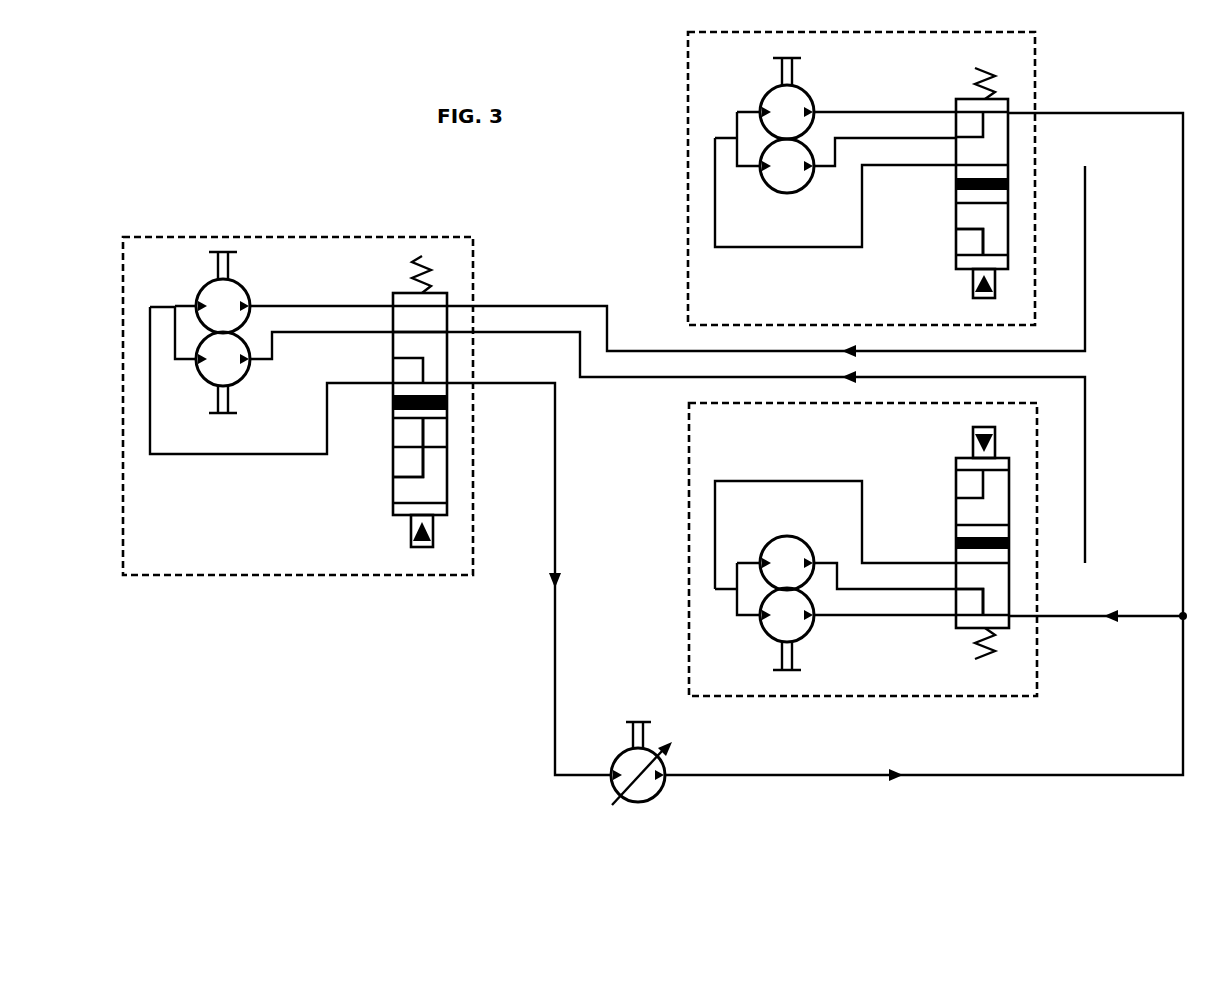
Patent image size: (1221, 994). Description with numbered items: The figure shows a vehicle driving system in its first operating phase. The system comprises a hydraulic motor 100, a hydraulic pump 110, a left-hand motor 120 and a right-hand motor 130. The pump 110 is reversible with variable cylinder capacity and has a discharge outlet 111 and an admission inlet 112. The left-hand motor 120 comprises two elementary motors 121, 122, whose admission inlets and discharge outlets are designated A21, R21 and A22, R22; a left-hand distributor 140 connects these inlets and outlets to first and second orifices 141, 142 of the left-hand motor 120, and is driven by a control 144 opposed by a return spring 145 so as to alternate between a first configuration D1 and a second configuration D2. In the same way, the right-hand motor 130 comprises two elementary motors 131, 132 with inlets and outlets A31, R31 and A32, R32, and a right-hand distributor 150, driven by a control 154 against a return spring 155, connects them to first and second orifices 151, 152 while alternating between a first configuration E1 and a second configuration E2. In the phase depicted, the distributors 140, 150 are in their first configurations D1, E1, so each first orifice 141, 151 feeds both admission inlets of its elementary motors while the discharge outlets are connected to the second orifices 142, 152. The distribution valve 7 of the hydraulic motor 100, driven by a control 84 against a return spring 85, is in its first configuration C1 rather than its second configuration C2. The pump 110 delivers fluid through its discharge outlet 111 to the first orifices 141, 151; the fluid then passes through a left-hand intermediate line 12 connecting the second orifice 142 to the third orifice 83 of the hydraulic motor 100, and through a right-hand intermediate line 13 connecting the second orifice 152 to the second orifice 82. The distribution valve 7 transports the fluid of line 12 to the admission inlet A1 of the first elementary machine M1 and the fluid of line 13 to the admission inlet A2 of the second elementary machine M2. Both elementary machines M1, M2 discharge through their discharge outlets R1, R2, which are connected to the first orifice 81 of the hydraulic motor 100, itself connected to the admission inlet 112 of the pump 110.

The hydraulic motor 100 is at (305, 237).
The first elementary machine M1 is at (215, 303).
The second elementary machine M2 is at (214, 356).
The discharge outlet of the first elementary machine R1 is at (196, 301).
The admission inlet of the first elementary machine A1 is at (250, 302).
The discharge outlet of the second elementary machine R2 is at (198, 362).
The admission inlet of the second elementary machine A2 is at (250, 361).
The distribution valve 7 is at (392, 485).
The first orifice of the hydraulic motor 81 is at (448, 383).
The second orifice of the hydraulic motor 82 is at (448, 333).
The third orifice of the hydraulic motor 83 is at (448, 305).
The control of the distribution valve 84 is at (418, 547).
The return spring of the distribution valve 85 is at (412, 262).
The first configuration of the distribution valve C1 is at (403, 318).
The second configuration of the distribution valve C2 is at (438, 469).
The left-hand intermediate line 12 is at (638, 351).
The right-hand intermediate line 13 is at (641, 378).
The left-hand motor 120 is at (688, 183).
The elementary motor 121 is at (781, 108).
The elementary motor 122 is at (784, 172).
The discharge outlet of elementary motor 121 R21 is at (760, 107).
The admission inlet of elementary motor 121 A21 is at (815, 108).
The discharge outlet of elementary motor 122 R22 is at (760, 170).
The admission inlet of elementary motor 122 A22 is at (815, 170).
The left-hand distributor 140 is at (955, 210).
The first orifice of the left-hand motor 141 is at (1010, 111).
The second orifice of the left-hand motor 142 is at (1010, 166).
The control of the left-hand distributor 144 is at (979, 298).
The return spring of the left-hand distributor 145 is at (978, 72).
The first configuration of the left-hand distributor D1 is at (999, 133).
The second configuration of the left-hand distributor D2 is at (999, 237).
The right-hand motor 130 is at (688, 563).
The elementary motor 131 is at (782, 626).
The elementary motor 132 is at (784, 560).
The discharge outlet of elementary motor 131 R31 is at (760, 618).
The admission inlet of elementary motor 131 A31 is at (815, 618).
The discharge outlet of elementary motor 132 R32 is at (760, 563).
The admission inlet of elementary motor 132 A32 is at (815, 563).
The right-hand distributor 150 is at (955, 513).
The first orifice of the right-hand motor 151 is at (1010, 618).
The second orifice of the right-hand motor 152 is at (1010, 562).
The control of the right-hand distributor 154 is at (979, 429).
The return spring of the right-hand distributor 155 is at (978, 655).
The first configuration of the right-hand distributor E1 is at (999, 597).
The second configuration of the right-hand distributor E2 is at (999, 493).
The hydraulic pump 110 is at (661, 797).
The discharge outlet of the pump 111 is at (666, 775).
The admission inlet of the pump 112 is at (611, 775).